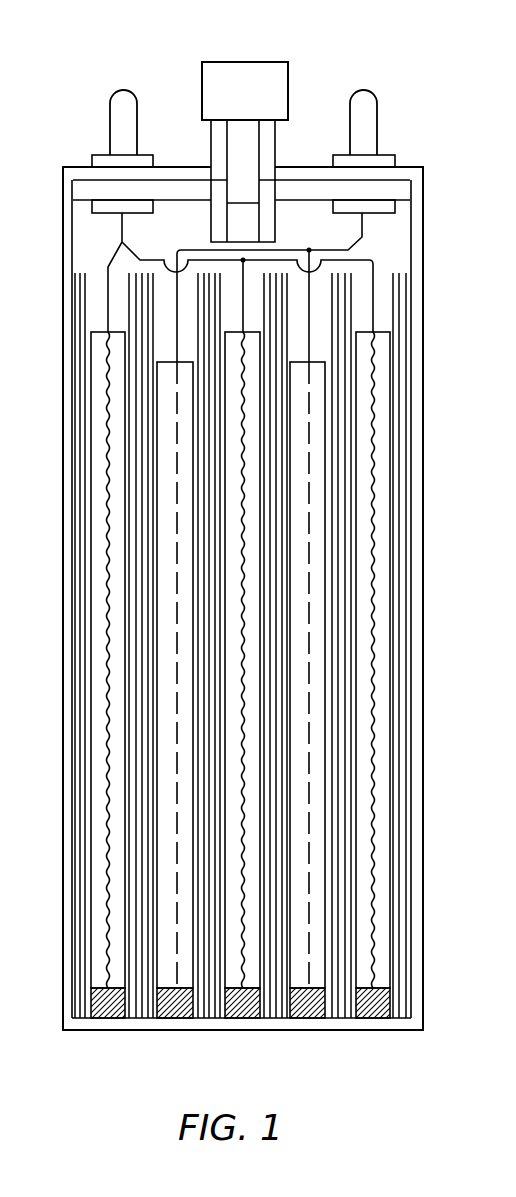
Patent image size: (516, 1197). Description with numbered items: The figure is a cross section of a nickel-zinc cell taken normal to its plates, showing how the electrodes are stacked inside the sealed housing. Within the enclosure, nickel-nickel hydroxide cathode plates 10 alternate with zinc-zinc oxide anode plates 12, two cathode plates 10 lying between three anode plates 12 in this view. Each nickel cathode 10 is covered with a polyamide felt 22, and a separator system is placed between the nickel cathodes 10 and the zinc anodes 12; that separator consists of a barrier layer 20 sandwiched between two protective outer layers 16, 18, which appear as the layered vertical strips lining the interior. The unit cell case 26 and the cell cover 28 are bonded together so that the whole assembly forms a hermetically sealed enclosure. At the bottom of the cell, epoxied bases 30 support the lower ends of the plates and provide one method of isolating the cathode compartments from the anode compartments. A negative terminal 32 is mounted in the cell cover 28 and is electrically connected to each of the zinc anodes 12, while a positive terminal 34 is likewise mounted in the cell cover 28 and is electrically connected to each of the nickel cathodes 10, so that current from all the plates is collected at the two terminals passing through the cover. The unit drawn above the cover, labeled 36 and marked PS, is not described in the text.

The nickel-nickel hydroxide cathode plates 10 is at (175, 1036).
The zinc-zinc oxide anode plates 12 is at (111, 1036).
The protective outer layer 16 is at (82, 993).
The protective outer layer 18 is at (70, 1021).
The barrier layer 20 is at (75, 1010).
The polyamide felt 22 is at (150, 1036).
The unit cell case 26 is at (418, 611).
The cell cover 28 is at (367, 187).
The epoxied bases 30 is at (98, 1007).
The negative terminal 32 is at (131, 115).
The positive terminal 34 is at (368, 115).
The power supply 36 is at (262, 62).